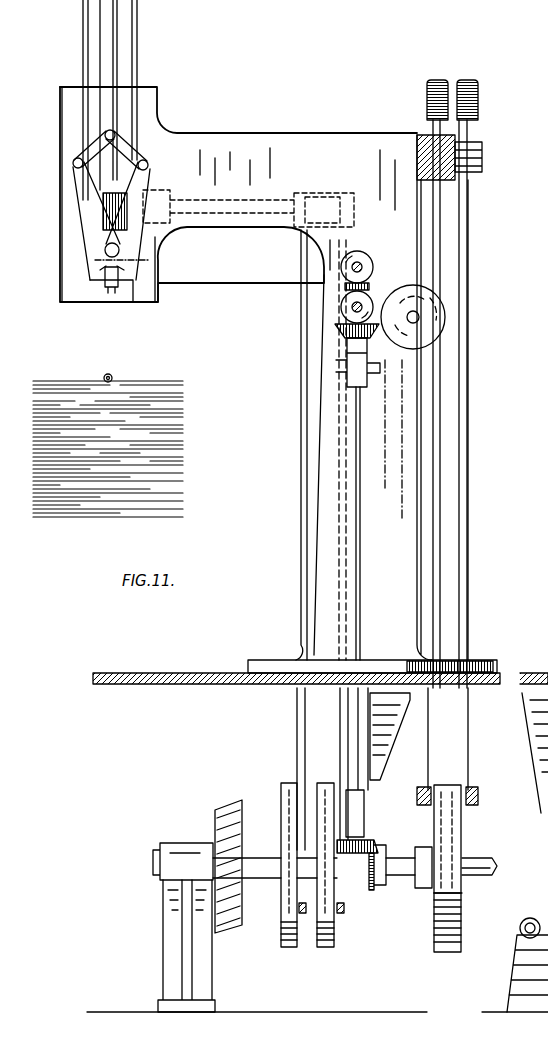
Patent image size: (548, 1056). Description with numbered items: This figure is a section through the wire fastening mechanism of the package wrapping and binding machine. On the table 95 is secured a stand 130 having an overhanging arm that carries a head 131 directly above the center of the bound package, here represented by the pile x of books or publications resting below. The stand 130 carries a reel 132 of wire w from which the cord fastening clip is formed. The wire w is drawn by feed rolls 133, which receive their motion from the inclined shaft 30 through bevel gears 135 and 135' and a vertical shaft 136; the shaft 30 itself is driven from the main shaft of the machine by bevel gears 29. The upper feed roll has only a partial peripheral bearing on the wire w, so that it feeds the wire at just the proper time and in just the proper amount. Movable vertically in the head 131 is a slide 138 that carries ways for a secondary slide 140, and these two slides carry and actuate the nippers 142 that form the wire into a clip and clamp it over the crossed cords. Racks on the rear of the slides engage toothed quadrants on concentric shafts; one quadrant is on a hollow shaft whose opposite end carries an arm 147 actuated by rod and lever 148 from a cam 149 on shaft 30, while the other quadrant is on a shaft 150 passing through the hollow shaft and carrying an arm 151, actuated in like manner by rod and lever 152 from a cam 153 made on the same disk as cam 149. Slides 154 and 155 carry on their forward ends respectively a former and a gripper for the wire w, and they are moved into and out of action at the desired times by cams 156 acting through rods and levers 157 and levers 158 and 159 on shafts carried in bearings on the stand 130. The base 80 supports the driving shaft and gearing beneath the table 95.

The head 131 is at (158, 103).
The slide 138 is at (90, 34).
The secondary slide 140 is at (113, 29).
The nippers 142 is at (88, 208).
The slide 154 is at (112, 290).
The slide 155 is at (107, 284).
The lever 159 is at (152, 302).
The lever 158 is at (340, 197).
The arm 147 is at (430, 110).
The arm 151 is at (478, 110).
The shaft 150 is at (483, 160).
The stand 130 is at (400, 515).
The rods and levers 157 is at (338, 742).
The feed rolls 133 is at (366, 298).
The bevel gear 135 is at (324, 328).
The vertical shaft 136 is at (358, 560).
The reel 132 is at (446, 318).
The table 95 is at (196, 672).
The rod and lever 148 is at (422, 782).
The rod and lever 152 is at (470, 780).
The cam 149 is at (435, 815).
The cam 153 is at (460, 813).
The shaft 30 is at (398, 880).
The bevel gears 29 is at (222, 806).
The cams 156 is at (325, 948).
The bevel gear 135' is at (369, 854).
The base 80 is at (366, 1007).
The wire w is at (247, 288).
The pile x is at (183, 438).